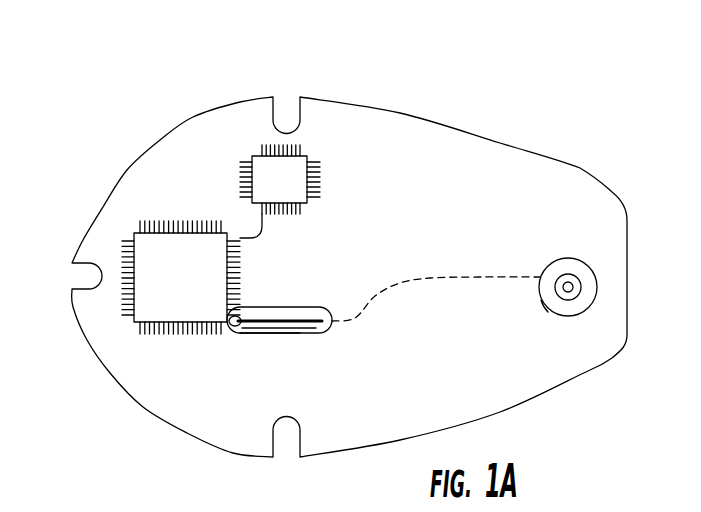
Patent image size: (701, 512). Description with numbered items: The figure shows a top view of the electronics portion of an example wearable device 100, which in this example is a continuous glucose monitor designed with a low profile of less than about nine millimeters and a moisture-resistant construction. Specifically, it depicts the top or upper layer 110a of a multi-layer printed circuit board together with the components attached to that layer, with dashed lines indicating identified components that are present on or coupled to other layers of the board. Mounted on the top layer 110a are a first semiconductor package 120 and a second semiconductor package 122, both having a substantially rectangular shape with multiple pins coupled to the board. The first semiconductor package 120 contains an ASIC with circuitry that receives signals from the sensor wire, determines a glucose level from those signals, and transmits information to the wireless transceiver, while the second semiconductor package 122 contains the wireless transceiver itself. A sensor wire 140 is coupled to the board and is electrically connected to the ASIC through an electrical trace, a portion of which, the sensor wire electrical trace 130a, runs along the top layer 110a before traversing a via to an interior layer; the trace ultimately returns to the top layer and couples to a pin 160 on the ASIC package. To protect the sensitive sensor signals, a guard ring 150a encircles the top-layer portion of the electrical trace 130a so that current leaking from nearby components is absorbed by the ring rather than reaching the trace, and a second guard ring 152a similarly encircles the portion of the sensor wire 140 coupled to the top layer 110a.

The wearable device 100 is at (92, 155).
The top layer of the PCB 110a is at (195, 196).
The first semiconductor package 120 is at (202, 282).
The second semiconductor package 122 is at (297, 190).
The sensor wire electrical trace 130a is at (312, 334).
The sensor wire 140 is at (558, 268).
The guard ring 150a is at (254, 334).
The guard ring 152a is at (543, 304).
The pin 160 is at (240, 320).